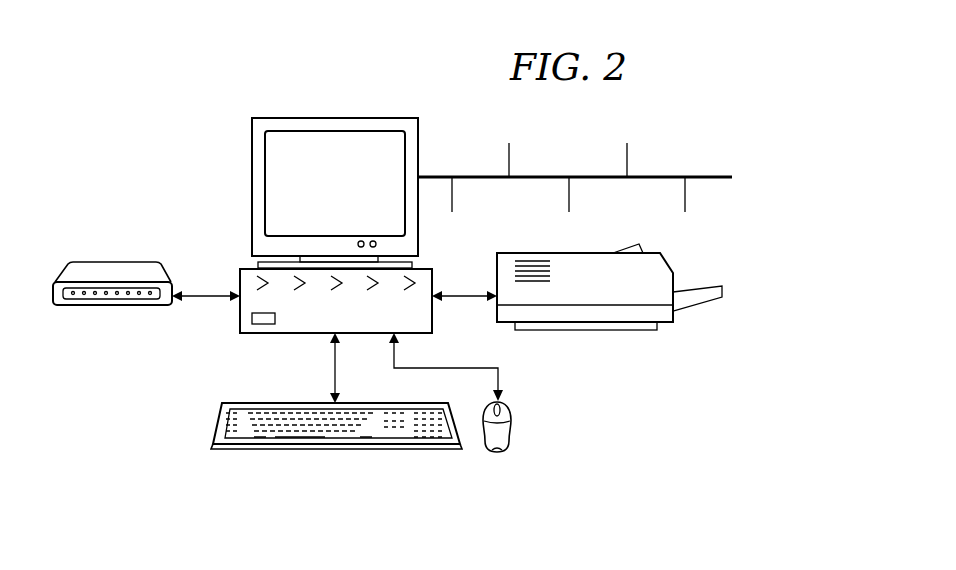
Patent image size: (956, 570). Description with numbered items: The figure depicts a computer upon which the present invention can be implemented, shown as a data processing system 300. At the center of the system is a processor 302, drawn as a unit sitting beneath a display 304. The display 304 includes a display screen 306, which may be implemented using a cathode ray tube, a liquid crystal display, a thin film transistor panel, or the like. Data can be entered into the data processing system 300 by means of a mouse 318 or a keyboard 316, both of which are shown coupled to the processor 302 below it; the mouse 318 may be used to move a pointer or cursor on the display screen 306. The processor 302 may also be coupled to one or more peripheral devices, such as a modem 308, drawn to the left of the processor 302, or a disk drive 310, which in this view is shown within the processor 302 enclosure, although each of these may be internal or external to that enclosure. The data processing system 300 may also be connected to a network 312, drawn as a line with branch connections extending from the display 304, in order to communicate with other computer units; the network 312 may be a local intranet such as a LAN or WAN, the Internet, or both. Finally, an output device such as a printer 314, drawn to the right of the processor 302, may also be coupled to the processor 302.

The data processing system 300 is at (128, 68).
The processor 302 is at (277, 334).
The display 304 is at (252, 152).
The display screen 306 is at (320, 142).
The modem 308 is at (112, 306).
The disk drive 310 is at (262, 313).
The network 312 is at (664, 176).
The printer 314 is at (592, 331).
The keyboard 316 is at (253, 450).
The mouse 318 is at (511, 428).